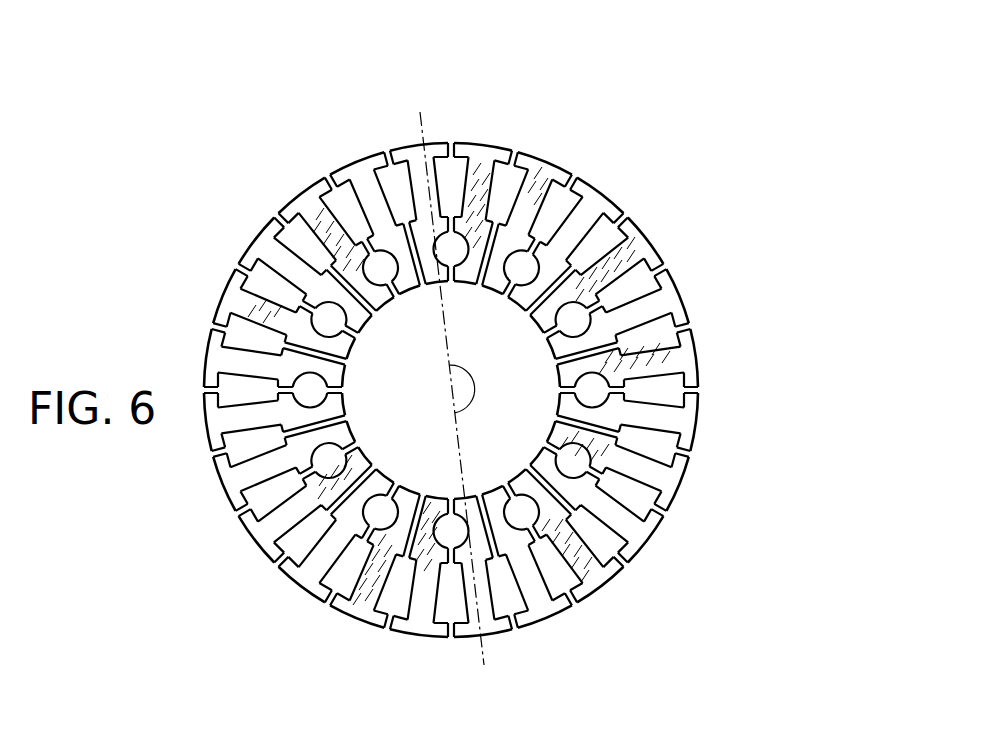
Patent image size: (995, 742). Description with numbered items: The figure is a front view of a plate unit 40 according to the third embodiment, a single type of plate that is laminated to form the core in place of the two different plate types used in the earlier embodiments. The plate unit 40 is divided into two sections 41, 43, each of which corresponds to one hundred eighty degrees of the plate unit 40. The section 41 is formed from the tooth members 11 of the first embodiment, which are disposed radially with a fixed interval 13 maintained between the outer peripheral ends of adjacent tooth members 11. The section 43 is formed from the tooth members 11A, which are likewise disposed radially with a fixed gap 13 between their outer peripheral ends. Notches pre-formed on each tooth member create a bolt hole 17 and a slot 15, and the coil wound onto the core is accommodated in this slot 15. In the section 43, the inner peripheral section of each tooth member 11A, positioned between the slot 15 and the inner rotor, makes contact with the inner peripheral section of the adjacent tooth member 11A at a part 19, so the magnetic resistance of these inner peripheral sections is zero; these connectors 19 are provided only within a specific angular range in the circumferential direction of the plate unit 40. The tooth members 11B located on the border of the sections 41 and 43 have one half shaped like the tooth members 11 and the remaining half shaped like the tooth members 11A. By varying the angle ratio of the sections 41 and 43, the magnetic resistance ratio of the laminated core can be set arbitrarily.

The plate unit 40 is at (500, 130).
The section 41 is at (269, 210).
The section 43 is at (702, 312).
The tooth member 11 is at (370, 195).
The tooth member 11A is at (541, 166).
The tooth member 11B is at (423, 150).
The fixed interval 13 is at (626, 218).
The slot 15 is at (563, 202).
The bolt hole 17 is at (511, 293).
The part 19 is at (641, 267).